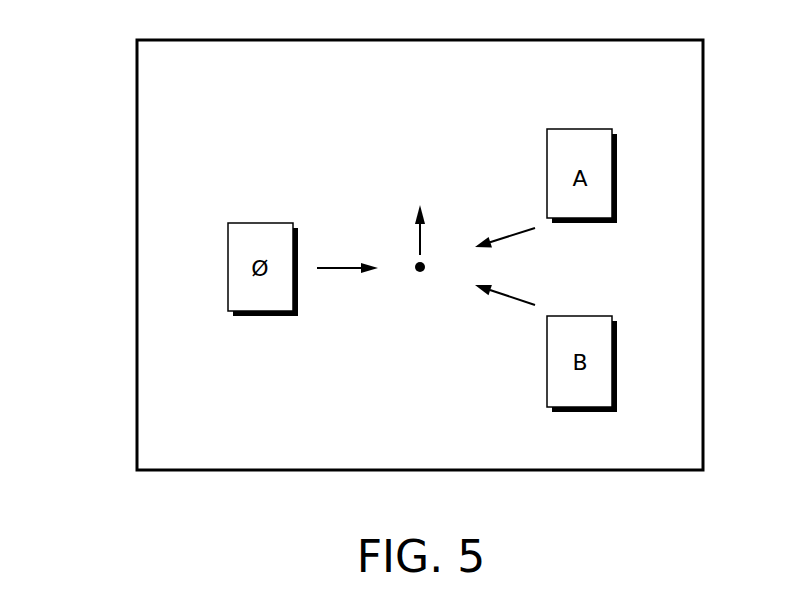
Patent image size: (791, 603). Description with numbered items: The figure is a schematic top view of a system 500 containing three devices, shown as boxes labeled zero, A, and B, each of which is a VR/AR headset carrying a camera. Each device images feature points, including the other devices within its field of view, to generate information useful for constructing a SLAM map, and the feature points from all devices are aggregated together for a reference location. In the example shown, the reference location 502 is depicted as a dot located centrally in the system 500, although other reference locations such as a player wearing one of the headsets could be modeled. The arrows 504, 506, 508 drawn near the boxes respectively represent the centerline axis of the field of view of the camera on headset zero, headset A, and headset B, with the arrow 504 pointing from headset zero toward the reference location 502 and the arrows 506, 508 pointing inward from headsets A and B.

The system 500 is at (180, 150).
The reference location 502 is at (420, 273).
The arrow 504 is at (340, 269).
The arrow 506 is at (513, 233).
The arrow 508 is at (520, 307).